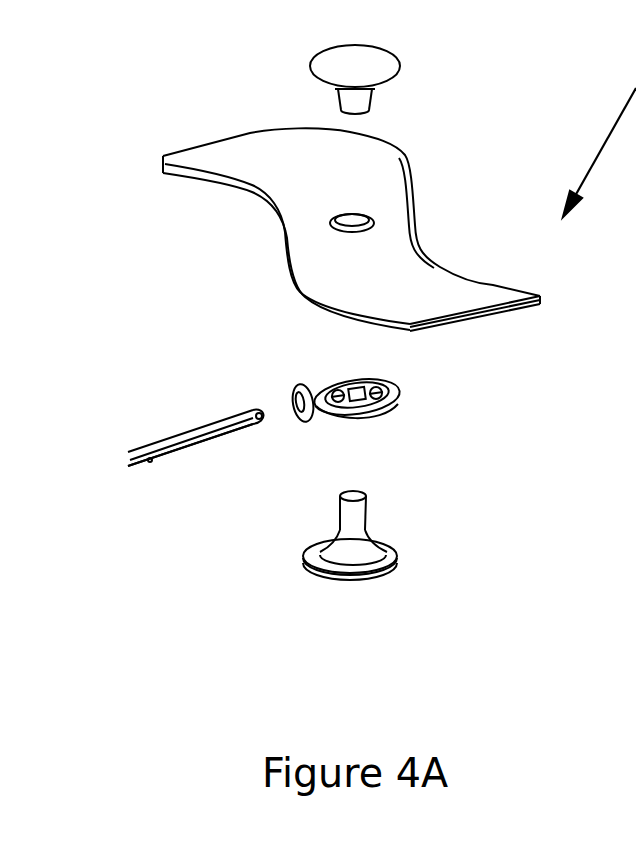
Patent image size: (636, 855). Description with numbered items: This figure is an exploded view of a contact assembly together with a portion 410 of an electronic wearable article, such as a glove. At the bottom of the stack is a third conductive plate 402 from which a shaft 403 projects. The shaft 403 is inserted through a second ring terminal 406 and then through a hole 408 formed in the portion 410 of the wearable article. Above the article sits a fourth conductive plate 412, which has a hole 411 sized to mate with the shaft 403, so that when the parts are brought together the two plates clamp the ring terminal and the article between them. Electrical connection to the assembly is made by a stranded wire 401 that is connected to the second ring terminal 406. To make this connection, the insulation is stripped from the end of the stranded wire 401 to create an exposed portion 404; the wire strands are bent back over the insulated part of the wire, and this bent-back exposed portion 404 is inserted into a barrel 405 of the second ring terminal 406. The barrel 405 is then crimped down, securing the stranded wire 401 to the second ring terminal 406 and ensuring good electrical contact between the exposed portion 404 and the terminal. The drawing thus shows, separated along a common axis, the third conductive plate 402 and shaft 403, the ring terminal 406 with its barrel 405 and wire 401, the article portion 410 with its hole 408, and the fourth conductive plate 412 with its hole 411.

The stranded wire 401 is at (222, 418).
The third conductive plate 402 is at (398, 559).
The shaft 403 is at (367, 517).
The exposed portion 404 is at (193, 445).
The barrel 405 is at (313, 395).
The second ring terminal 406 is at (447, 382).
The hole 408 is at (380, 223).
The portion of the electronic wearable article 410 is at (467, 290).
The hole 411 is at (377, 103).
The fourth conductive plate 412 is at (398, 57).